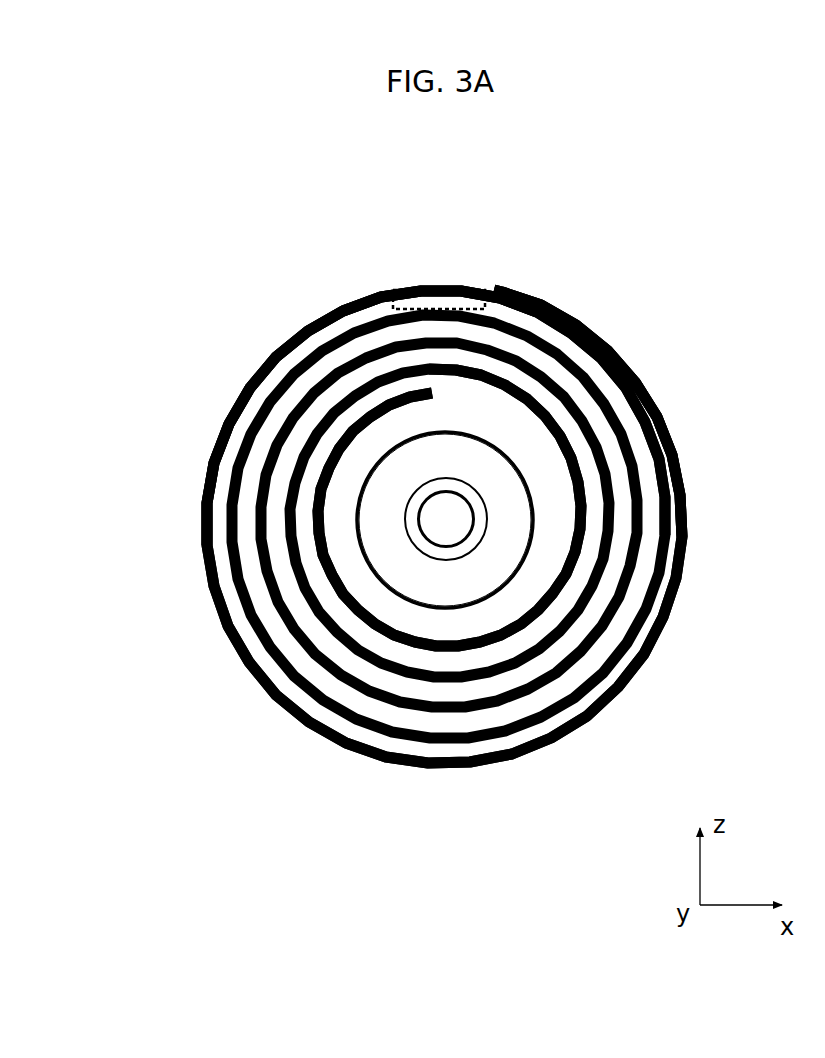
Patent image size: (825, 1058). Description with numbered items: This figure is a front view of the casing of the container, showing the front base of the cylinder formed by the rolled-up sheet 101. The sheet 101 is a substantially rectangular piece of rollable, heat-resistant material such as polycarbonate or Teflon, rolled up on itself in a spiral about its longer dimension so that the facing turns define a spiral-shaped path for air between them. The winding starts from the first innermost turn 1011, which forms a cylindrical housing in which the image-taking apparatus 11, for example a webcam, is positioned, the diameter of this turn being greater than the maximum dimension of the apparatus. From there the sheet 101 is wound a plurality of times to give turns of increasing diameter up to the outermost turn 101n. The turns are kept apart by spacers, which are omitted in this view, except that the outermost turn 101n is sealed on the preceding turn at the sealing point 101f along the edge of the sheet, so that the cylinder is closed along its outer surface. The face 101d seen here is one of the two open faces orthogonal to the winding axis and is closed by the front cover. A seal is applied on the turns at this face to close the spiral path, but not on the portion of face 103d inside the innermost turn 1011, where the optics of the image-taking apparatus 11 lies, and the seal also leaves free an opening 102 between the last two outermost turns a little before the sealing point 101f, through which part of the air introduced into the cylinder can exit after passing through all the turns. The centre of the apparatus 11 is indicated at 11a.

The rolled-up sheet 101 is at (684, 603).
The first innermost turn 1011 is at (355, 570).
The outermost turn 101n is at (232, 462).
The open face 101d is at (286, 334).
The sealing point 101f is at (492, 285).
The opening 102 is at (435, 291).
The image-taking apparatus 11 is at (525, 483).
The center of circle 11a is at (447, 521).
The portion of face 103d is at (425, 583).